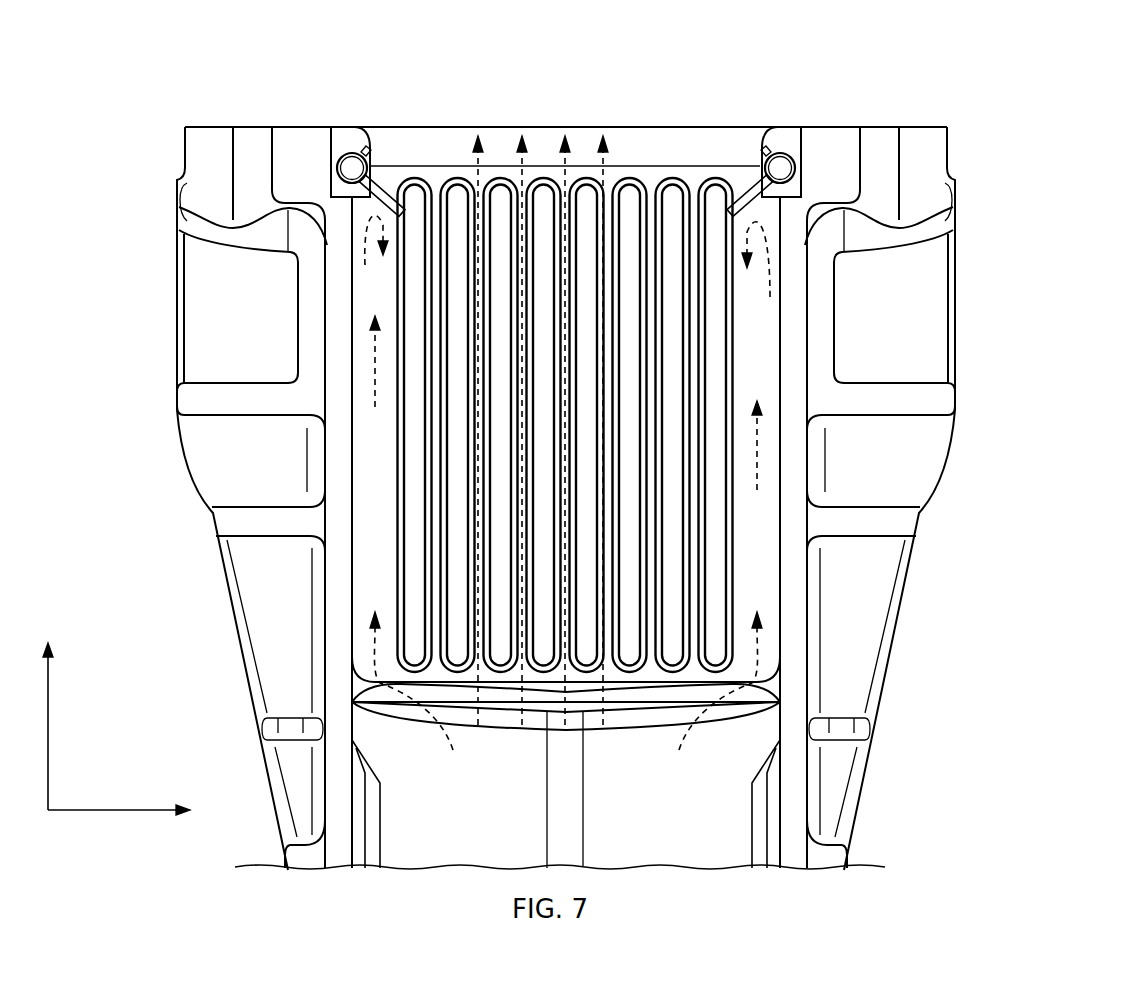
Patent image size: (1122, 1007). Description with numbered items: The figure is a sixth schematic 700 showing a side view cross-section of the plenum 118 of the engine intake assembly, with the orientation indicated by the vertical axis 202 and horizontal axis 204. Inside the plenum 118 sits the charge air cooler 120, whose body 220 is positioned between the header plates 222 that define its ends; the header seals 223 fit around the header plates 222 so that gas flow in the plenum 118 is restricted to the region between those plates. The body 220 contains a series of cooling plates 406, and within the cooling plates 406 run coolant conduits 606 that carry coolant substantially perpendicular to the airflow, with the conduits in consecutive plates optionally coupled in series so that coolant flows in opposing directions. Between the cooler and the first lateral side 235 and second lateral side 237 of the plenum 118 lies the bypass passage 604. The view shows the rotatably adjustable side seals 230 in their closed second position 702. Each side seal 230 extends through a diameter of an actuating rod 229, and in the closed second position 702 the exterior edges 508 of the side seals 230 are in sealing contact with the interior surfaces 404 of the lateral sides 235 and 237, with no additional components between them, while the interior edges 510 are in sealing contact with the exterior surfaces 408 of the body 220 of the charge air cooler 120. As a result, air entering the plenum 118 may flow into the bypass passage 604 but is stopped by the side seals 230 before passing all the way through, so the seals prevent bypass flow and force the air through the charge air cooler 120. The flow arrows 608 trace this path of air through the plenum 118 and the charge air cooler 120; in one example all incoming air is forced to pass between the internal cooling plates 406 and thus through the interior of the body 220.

The plenum 118 is at (100, 205).
The charge air cooler 120 is at (752, 517).
The vertical axis 202 is at (50, 760).
The horizontal axis 204 is at (123, 810).
The body of the charge air cooler 220 is at (547, 453).
The header plates 222 is at (739, 603).
The header seals 223 is at (641, 161).
The actuating rods 229 is at (343, 156).
The side seals 230 is at (352, 158).
The first lateral side 235 is at (1010, 532).
The second lateral side 237 is at (135, 482).
The interior surfaces of the lateral sides 404 is at (356, 446).
The cooling plates 406 is at (735, 507).
The exterior surfaces of the body 408 is at (390, 545).
The exterior edges of the side seals 508 is at (335, 152).
The interior edges of the side seals 510 is at (408, 212).
The bypass passage 604 is at (770, 322).
The coolant conduits 606 is at (635, 387).
The flow arrows 608 is at (603, 715).
The sixth schematic 700 is at (1028, 132).
The closed second position 702 is at (384, 156).